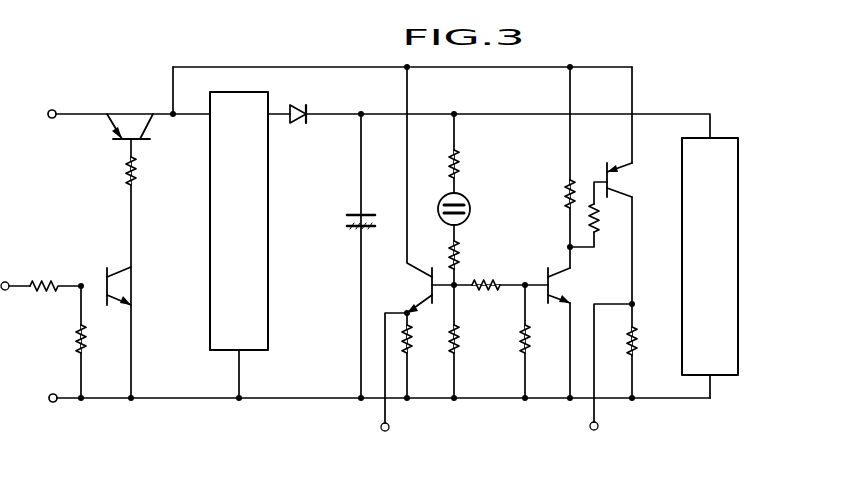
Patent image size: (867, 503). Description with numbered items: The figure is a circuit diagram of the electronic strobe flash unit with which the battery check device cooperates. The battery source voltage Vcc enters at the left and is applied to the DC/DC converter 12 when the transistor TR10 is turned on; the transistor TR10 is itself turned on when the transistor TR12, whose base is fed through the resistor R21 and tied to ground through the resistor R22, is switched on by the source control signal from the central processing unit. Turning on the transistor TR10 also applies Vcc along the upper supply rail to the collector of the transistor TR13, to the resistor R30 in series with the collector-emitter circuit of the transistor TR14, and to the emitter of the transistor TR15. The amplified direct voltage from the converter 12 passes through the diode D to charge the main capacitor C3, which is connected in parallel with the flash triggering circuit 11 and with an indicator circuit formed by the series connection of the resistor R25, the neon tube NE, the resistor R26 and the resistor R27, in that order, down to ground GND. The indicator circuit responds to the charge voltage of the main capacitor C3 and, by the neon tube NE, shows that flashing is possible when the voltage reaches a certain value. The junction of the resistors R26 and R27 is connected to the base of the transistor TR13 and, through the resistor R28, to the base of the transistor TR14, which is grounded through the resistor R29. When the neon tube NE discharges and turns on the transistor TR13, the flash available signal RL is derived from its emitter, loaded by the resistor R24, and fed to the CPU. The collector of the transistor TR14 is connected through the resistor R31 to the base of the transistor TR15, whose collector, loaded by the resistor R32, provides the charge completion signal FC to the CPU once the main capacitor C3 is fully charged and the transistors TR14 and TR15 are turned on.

The flash triggering circuit 11 is at (681, 257).
The DC/DC converter 12 is at (211, 231).
The transistor TR10 is at (132, 114).
The transistor TR12 is at (147, 286).
The transistor TR13 is at (399, 290).
The transistor TR14 is at (587, 285).
The transistor TR15 is at (647, 180).
The resistor R21 is at (41, 273).
The resistor R22 is at (61, 339).
The resistor R24 is at (429, 341).
The resistor R25 is at (476, 165).
The resistor R26 is at (476, 255).
The resistor R27 is at (476, 341).
The resistor R28 is at (493, 299).
The resistor R29 is at (546, 341).
The resistor R30 is at (550, 195).
The resistor R31 is at (605, 214).
The resistor R32 is at (654, 343).
The main capacitor C3 is at (345, 218).
The diode D is at (298, 102).
The neon tube NE is at (470, 209).
The flash available signal RL is at (389, 385).
The charge completion signal FC is at (606, 380).
The ground GND is at (27, 398).